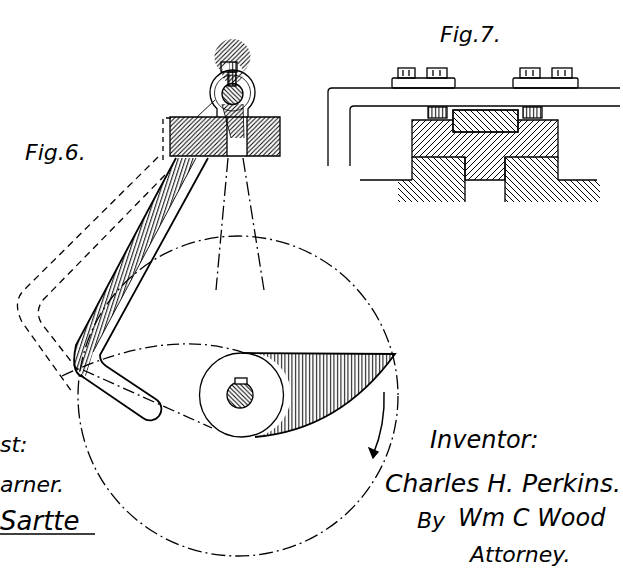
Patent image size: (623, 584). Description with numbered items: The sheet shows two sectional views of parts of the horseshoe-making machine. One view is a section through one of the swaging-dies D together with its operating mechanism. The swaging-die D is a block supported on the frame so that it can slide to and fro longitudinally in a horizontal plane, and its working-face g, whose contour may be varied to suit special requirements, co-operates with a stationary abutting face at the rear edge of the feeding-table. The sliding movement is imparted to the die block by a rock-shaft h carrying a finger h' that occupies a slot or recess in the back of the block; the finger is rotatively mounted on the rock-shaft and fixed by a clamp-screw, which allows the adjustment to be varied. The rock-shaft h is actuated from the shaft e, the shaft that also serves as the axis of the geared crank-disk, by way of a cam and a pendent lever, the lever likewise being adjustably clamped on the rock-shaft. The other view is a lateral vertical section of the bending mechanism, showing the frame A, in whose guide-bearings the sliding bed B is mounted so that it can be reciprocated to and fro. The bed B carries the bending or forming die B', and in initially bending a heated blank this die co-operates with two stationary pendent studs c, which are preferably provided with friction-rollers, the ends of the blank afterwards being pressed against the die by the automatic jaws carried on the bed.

In FIG. 6, the rock-shaft h is at (241, 74).
In FIG. 6, the swaging-die D is at (253, 117).
In FIG. 6, the working-face g is at (231, 136).
In FIG. 6, the finger h' is at (240, 224).
In FIG. 6, the shaft e is at (251, 392).
In FIG. 7, the pendent stud c is at (428, 112).
In FIG. 7, the sliding bed B is at (492, 150).
In FIG. 7, the bending or forming die B' is at (485, 121).
In FIG. 7, the frame A is at (480, 179).